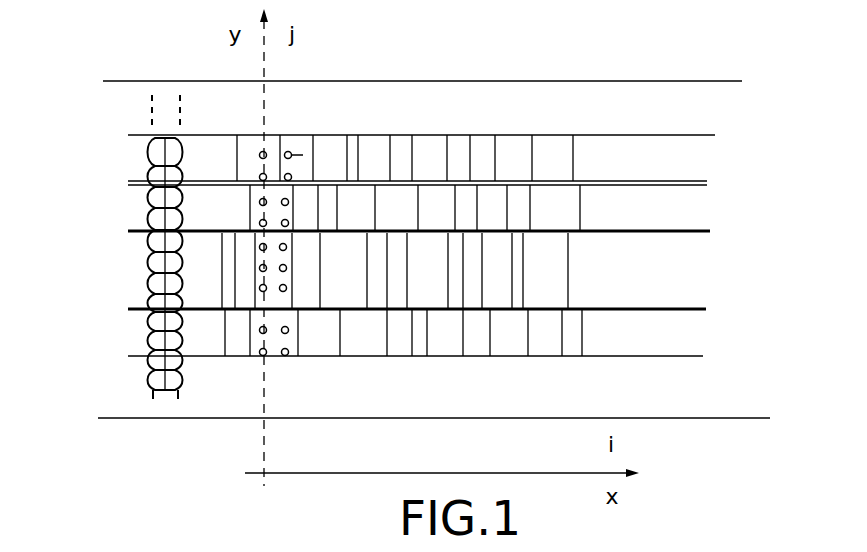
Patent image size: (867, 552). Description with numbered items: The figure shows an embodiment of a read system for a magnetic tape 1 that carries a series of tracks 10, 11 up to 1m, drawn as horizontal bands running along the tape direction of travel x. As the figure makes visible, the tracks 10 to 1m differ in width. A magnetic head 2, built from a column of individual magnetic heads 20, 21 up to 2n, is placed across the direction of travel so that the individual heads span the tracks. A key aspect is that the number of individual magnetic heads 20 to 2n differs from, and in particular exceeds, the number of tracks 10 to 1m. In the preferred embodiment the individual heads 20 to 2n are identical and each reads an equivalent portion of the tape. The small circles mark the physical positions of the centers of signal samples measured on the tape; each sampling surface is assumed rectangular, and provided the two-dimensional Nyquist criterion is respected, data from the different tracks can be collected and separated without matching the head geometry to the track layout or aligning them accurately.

The magnetic tape 1 is at (544, 116).
The track 1m is at (668, 158).
The magnetic head 2 is at (151, 286).
The individual magnetic head 2n is at (258, 155).
The individual magnetic head 20 is at (152, 376).
The individual magnetic head 21 is at (250, 353).
The track 10 is at (662, 343).
The track 11 is at (682, 286).